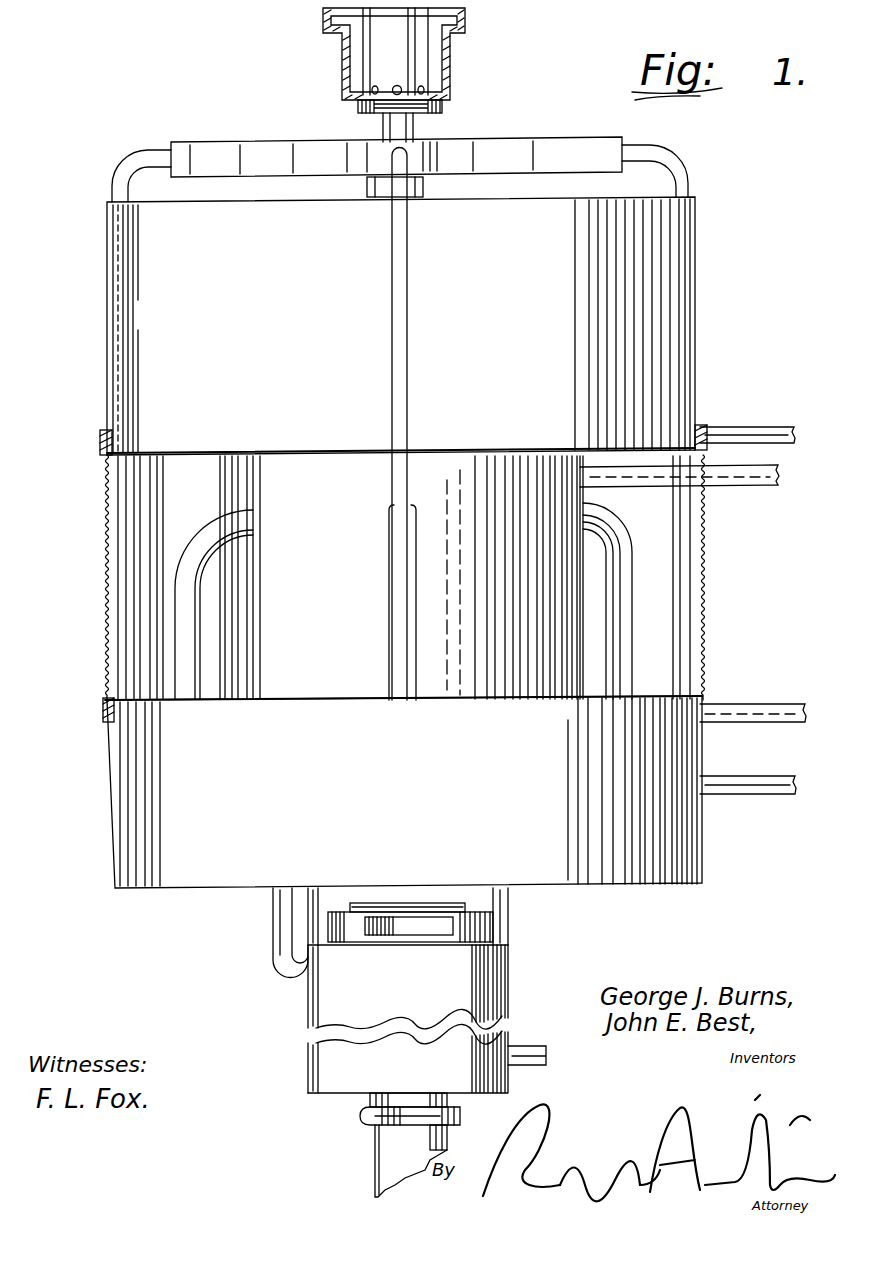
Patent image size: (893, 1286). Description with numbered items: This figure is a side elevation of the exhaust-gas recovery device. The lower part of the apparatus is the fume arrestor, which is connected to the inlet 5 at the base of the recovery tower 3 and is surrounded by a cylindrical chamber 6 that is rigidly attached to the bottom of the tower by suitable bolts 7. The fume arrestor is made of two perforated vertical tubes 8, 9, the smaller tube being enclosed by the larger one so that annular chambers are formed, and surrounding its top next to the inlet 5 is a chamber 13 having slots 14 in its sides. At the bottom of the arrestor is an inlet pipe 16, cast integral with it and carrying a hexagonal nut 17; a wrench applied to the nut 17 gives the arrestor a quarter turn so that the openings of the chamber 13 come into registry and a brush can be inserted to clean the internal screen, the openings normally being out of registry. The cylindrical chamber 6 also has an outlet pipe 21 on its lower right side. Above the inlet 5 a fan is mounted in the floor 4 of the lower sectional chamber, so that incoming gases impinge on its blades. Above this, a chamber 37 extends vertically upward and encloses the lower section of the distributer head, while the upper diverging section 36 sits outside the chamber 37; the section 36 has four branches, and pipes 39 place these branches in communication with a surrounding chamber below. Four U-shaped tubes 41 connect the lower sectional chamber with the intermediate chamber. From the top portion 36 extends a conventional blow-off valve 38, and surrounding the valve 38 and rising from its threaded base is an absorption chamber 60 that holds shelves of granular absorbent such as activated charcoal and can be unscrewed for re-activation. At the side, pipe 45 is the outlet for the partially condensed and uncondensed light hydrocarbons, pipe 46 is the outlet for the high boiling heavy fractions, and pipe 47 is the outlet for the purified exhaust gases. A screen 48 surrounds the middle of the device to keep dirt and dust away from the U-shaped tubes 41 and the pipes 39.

The recovery tower 3 is at (118, 793).
The floor of the lower sectional chamber 4 is at (36, 275).
The inlet 5 is at (770, 367).
The cylindrical chamber 6 is at (791, 502).
The bolts 7 is at (790, 736).
The vertical tube 8 is at (580, 922).
The vertical tube 9 is at (540, 992).
The chamber 13 is at (333, 932).
The slots 14 is at (383, 930).
The inlet pipe 16 is at (390, 1158).
The hexagonal nut 17 is at (360, 1115).
The outlet pipe 21 is at (548, 1058).
The upper diverging section of the distributer head 36 is at (518, 138).
The chamber 37 is at (668, 228).
The blow-off valve 38 is at (443, 103).
The pipes 39 is at (689, 592).
The U-shaped tubes 41 is at (188, 620).
The pipe 45 is at (645, 478).
The pipe 46 is at (790, 693).
The pipe 47 is at (775, 412).
The screen 48 is at (704, 645).
The absorption chamber 60 is at (450, 17).